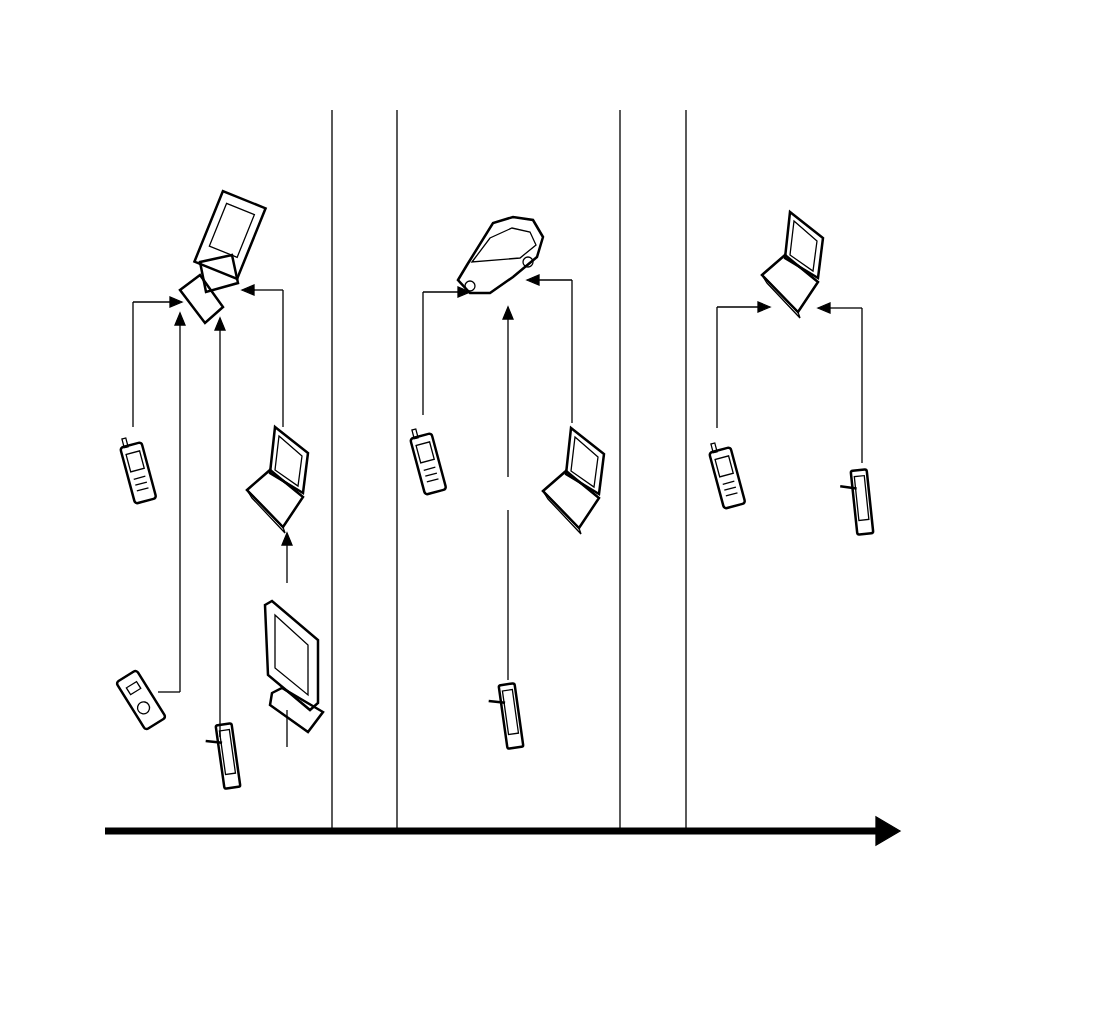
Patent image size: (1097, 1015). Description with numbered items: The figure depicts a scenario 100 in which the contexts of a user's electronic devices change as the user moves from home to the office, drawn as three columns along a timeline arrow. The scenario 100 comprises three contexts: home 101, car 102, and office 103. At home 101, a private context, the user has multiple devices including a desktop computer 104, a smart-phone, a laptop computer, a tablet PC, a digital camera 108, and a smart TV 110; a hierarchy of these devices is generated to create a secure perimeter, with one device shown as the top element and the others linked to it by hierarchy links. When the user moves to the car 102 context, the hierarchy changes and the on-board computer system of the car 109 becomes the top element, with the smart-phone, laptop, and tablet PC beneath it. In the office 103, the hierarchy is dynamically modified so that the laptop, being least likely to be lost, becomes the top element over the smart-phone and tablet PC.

The scenario 100 is at (530, 33).
The home 101 is at (232, 117).
The car 102 is at (532, 117).
The office 103 is at (813, 123).
The desktop computer 104 is at (243, 222).
The digital camera 108 is at (143, 733).
The car 109 is at (532, 217).
The smart TV 110 is at (294, 690).